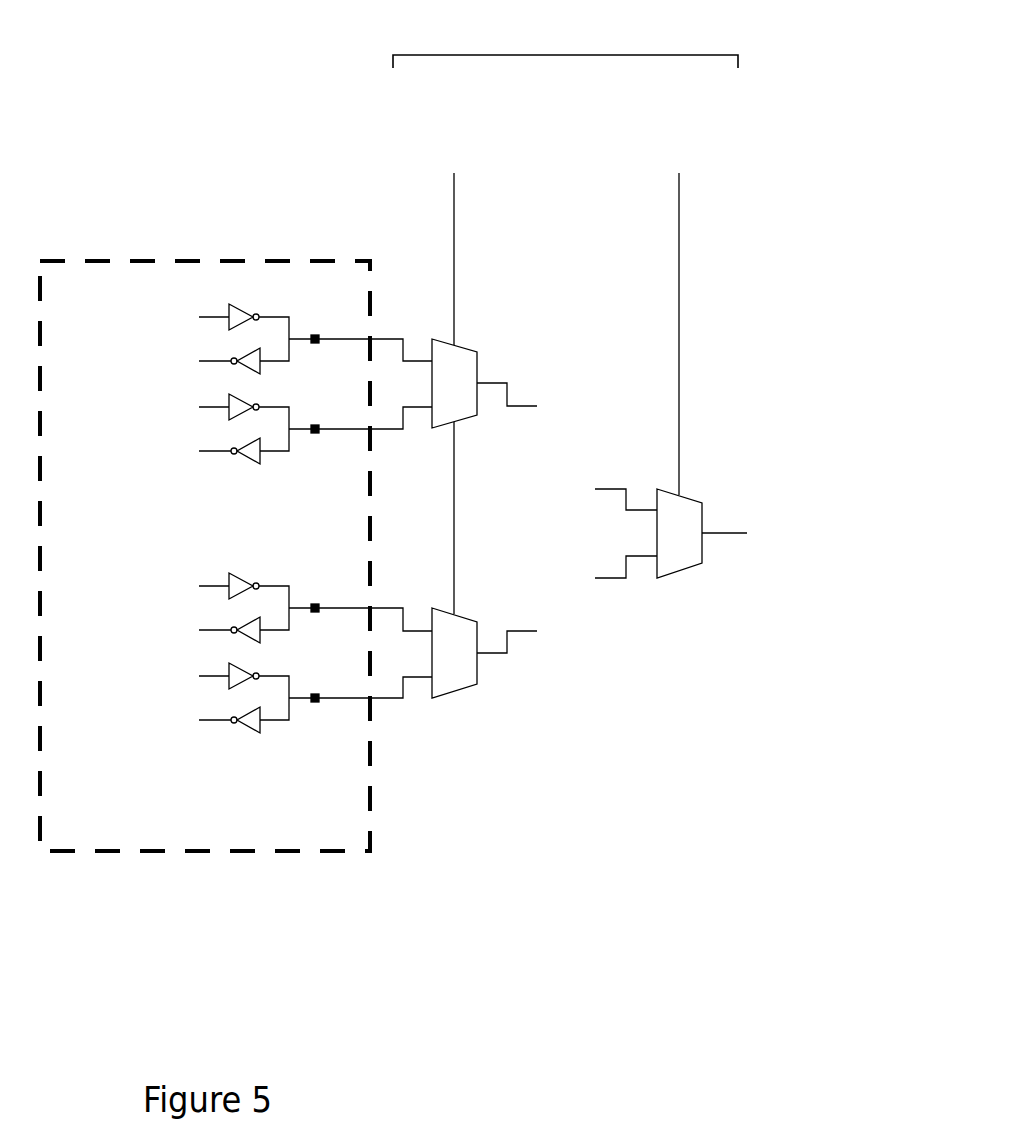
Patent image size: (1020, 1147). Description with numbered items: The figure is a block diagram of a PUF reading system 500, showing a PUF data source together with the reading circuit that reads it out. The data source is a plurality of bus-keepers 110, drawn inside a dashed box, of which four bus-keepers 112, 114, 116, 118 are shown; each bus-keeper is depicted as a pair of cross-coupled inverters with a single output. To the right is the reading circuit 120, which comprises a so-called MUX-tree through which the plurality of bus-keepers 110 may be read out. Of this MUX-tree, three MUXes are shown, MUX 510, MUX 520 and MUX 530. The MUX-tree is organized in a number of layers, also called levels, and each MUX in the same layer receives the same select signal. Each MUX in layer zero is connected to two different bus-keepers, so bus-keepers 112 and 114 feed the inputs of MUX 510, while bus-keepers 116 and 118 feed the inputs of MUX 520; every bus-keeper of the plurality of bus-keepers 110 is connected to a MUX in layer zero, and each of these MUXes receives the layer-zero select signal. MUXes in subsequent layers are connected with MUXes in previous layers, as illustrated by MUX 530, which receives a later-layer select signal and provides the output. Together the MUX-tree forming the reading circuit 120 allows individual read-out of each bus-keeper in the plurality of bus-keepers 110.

The PUF reading system 500 is at (887, 719).
The plurality of bus-keepers 110 is at (335, 805).
The bus-keeper 112 is at (272, 339).
The bus-keeper 114 is at (272, 429).
The bus-keeper 116 is at (278, 608).
The bus-keeper 118 is at (278, 698).
The reading circuit 120 is at (606, 377).
The MUX 510 is at (478, 352).
The MUX 520 is at (465, 680).
The MUX 530 is at (690, 497).